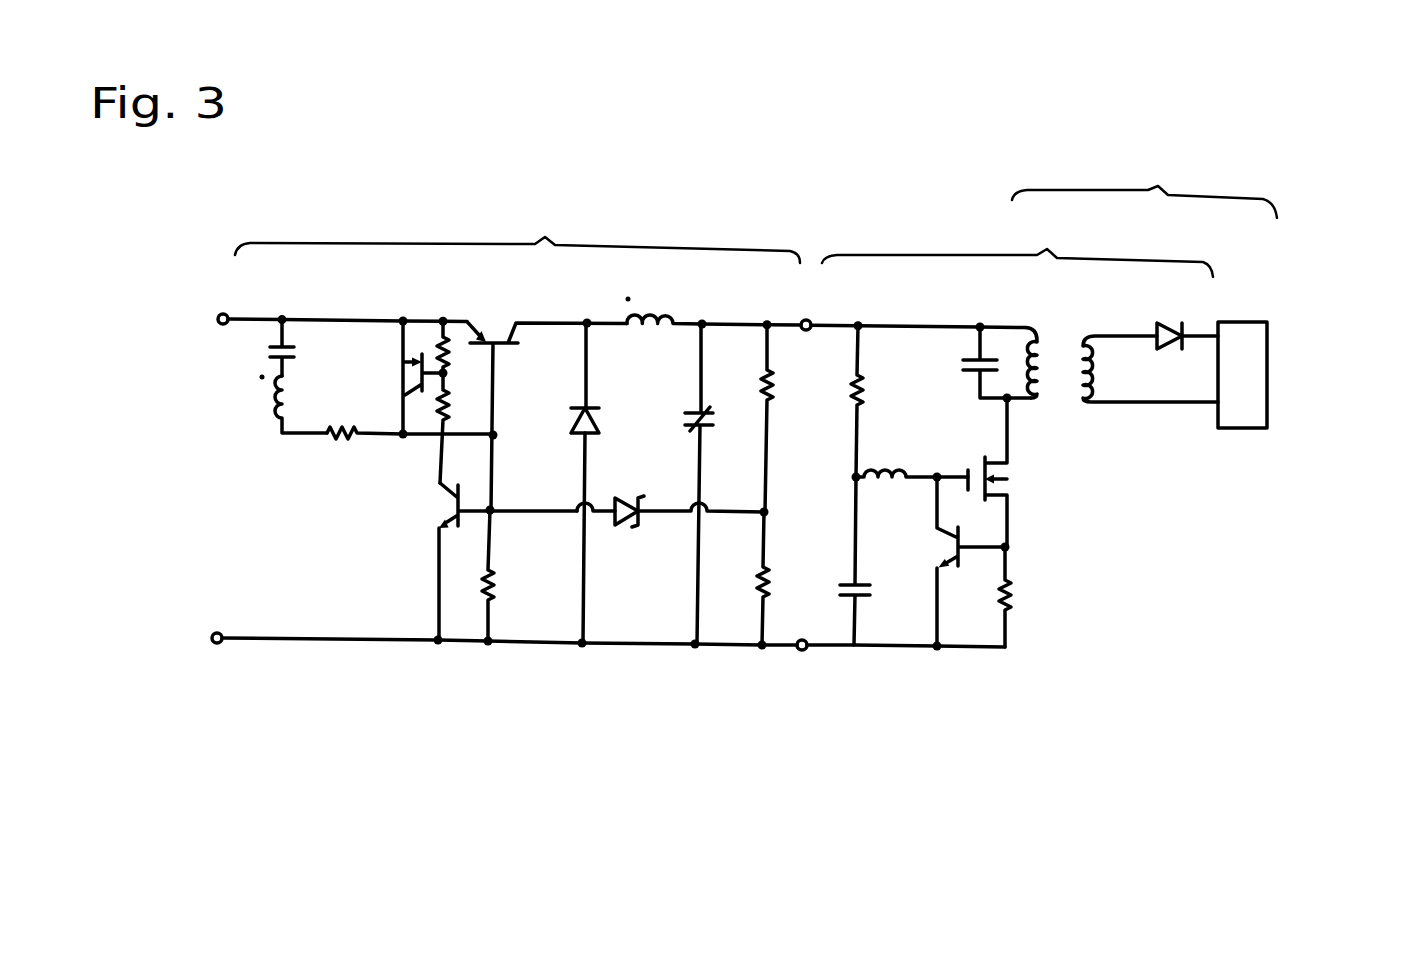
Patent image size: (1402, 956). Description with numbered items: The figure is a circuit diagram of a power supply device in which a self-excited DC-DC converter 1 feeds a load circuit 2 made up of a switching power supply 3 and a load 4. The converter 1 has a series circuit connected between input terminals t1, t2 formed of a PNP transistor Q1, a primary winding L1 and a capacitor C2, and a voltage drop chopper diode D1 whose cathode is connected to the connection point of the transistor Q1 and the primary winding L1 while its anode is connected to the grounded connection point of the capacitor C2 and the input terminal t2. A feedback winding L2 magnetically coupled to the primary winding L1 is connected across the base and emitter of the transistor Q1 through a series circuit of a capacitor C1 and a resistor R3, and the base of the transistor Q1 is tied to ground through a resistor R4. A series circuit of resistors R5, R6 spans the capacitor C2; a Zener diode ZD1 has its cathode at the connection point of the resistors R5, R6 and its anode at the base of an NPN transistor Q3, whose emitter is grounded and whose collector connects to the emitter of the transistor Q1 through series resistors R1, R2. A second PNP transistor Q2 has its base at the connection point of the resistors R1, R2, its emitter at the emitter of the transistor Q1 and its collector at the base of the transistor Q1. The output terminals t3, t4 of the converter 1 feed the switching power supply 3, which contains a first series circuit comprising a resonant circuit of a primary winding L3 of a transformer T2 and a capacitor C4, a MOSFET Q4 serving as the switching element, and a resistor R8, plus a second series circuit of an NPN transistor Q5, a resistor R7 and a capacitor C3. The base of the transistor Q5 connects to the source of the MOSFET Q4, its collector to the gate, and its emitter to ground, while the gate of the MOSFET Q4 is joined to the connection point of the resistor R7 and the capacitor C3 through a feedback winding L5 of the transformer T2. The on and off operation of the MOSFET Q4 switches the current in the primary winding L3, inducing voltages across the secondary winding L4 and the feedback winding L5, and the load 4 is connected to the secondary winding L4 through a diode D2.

The self-excited DC-DC converter 1 is at (517, 225).
The load circuit 2 is at (1144, 178).
The switching power supply 3 is at (1017, 240).
The load 4 is at (1243, 322).
The input terminal t1 is at (336, 290).
The input terminal t2 is at (501, 658).
The output terminal t3 is at (912, 295).
The output terminal t4 is at (898, 671).
The capacitor C1 is at (303, 345).
The capacitor C2 is at (679, 484).
The capacitor C3 is at (880, 561).
The capacitor C4 is at (966, 361).
The primary winding L1 is at (714, 289).
The feedback winding L2 is at (298, 403).
The primary winding L3 is at (1036, 388).
The secondary winding L4 is at (1148, 393).
The feedback winding L5 is at (912, 445).
The transformer T2 is at (1115, 364).
The resistor R1 is at (437, 333).
The resistor R2 is at (446, 414).
The resistor R3 is at (362, 458).
The resistor R4 is at (515, 578).
The resistor R5 is at (794, 416).
The resistor R6 is at (790, 581).
The resistor R7 is at (886, 401).
The resistor R8 is at (1034, 597).
The PNP transistor Q1 is at (547, 396).
The PNP transistor Q2 is at (423, 378).
The NPN transistor Q3 is at (482, 563).
The MOS field effect transistor Q4 is at (1015, 473).
The NPN transistor Q5 is at (936, 564).
The diode D1 is at (608, 483).
The diode D2 is at (1179, 310).
The Zener diode ZD1 is at (673, 538).